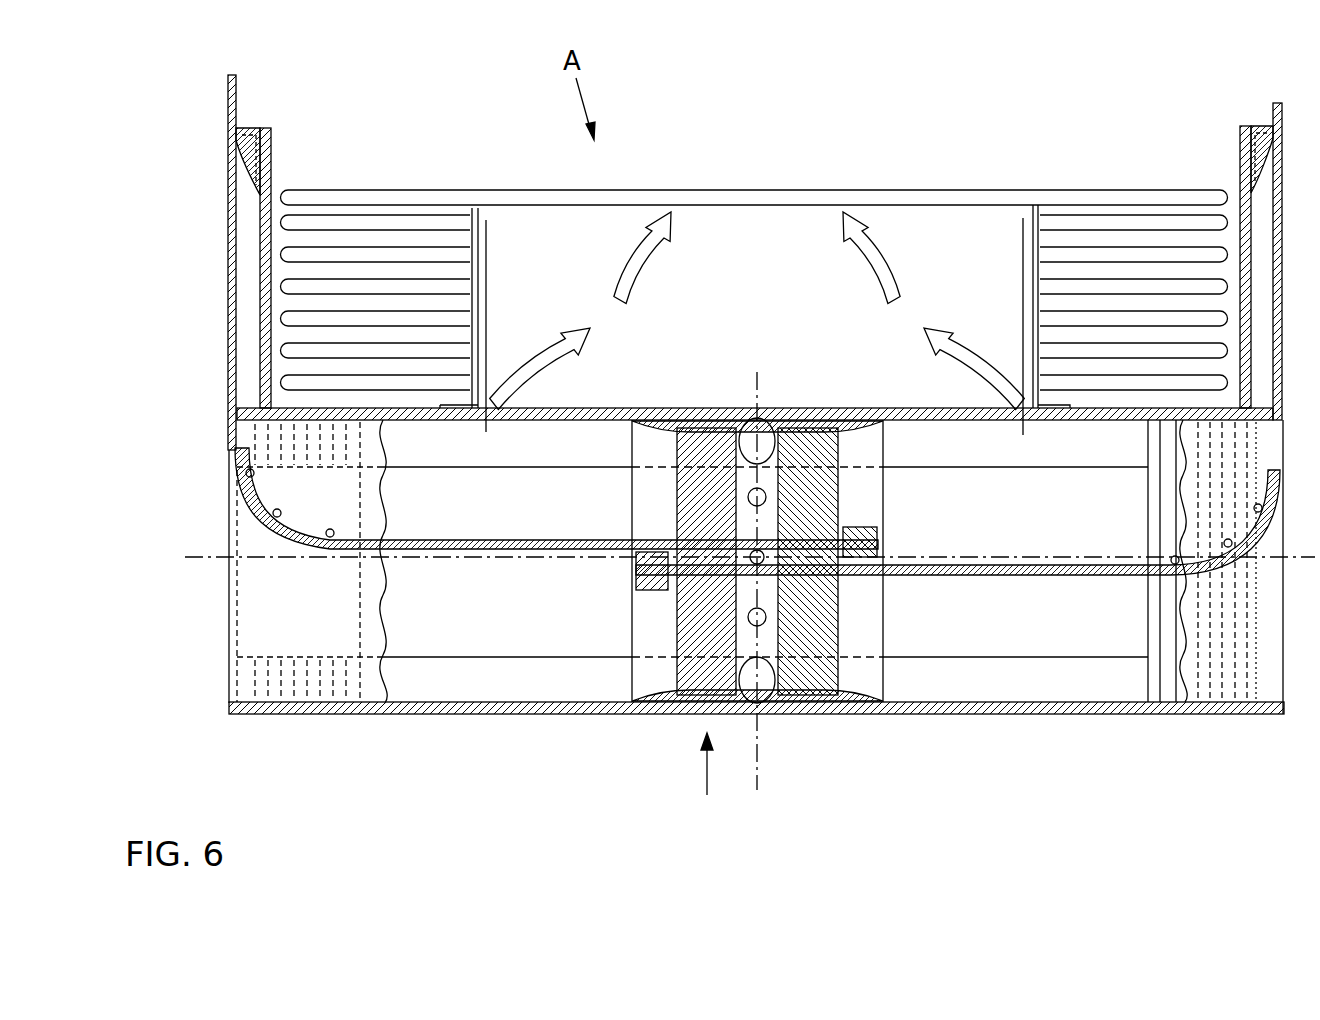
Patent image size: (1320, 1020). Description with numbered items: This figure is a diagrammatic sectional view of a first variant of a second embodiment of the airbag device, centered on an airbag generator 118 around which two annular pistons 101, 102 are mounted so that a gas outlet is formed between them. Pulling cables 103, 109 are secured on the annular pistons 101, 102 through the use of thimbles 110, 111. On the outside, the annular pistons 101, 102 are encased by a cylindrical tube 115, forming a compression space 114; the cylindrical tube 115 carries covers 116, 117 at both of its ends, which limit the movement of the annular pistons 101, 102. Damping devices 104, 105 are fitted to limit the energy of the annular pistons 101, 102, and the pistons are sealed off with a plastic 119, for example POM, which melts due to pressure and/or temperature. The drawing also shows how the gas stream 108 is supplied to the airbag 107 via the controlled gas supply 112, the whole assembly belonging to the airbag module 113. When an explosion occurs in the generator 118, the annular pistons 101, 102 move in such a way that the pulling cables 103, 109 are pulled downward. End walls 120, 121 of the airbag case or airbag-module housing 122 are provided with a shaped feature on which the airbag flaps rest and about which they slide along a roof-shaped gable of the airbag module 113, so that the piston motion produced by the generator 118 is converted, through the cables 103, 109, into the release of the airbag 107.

The annular piston 101 is at (810, 507).
The annular piston 102 is at (700, 507).
The pulling cable 103 is at (473, 540).
The damping device 104 is at (325, 693).
The damping device 105 is at (1160, 690).
The airbag 107 is at (457, 190).
The gas stream 108 is at (640, 276).
The pulling cable 109 is at (940, 578).
The thimble 110 is at (648, 577).
The thimble 111 is at (865, 533).
The controlled gas supply 112 is at (500, 410).
The airbag module 113 is at (760, 242).
The compression space 114 is at (750, 650).
The cylindrical tube 115 is at (588, 712).
The cover 116 is at (229, 625).
The cover 117 is at (1262, 675).
The airbag generator 118 is at (709, 786).
The plastic 119 is at (850, 703).
The end wall 120 is at (258, 177).
The end wall 121 is at (1253, 172).
The airbag-module housing 122 is at (275, 213).